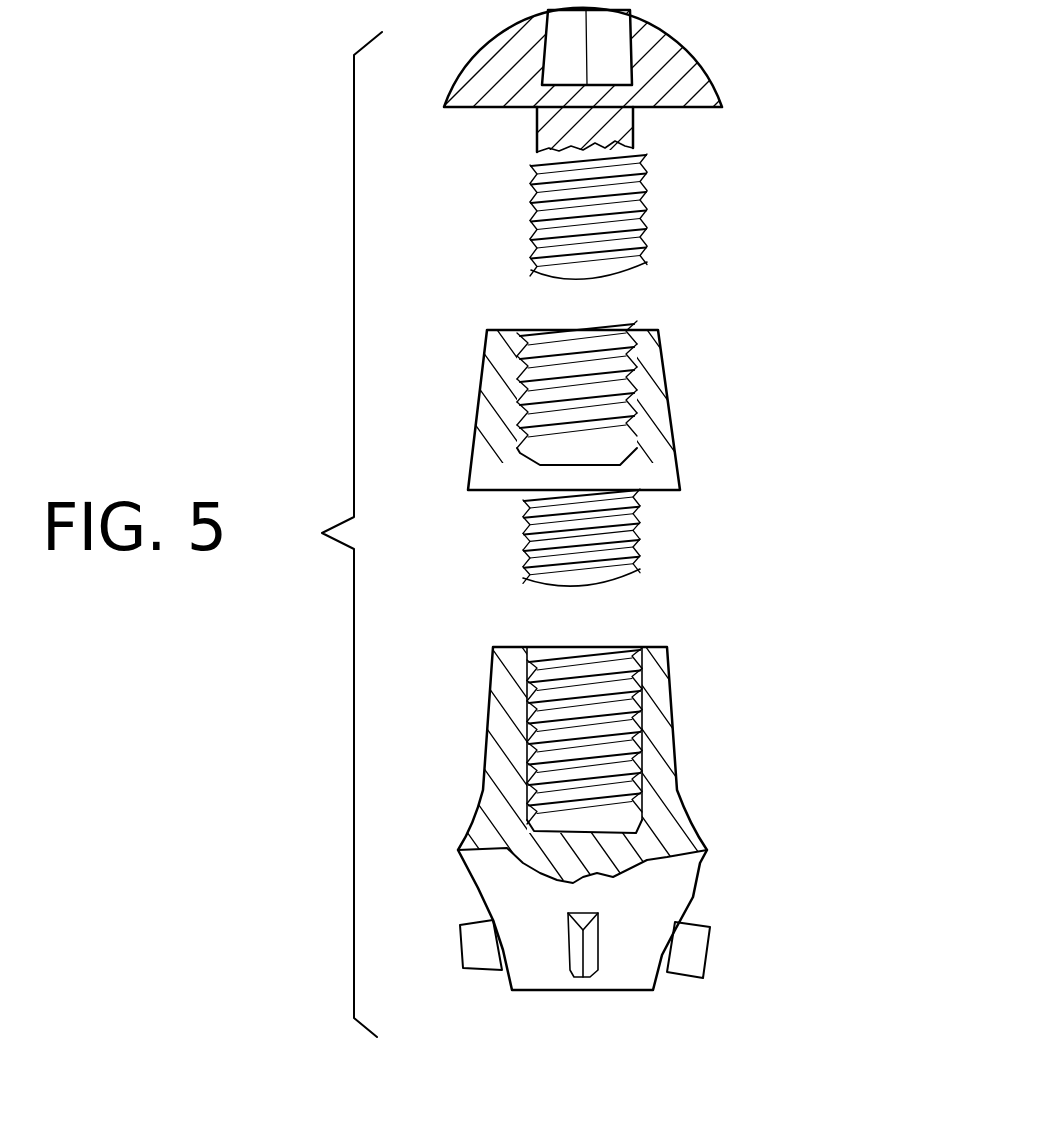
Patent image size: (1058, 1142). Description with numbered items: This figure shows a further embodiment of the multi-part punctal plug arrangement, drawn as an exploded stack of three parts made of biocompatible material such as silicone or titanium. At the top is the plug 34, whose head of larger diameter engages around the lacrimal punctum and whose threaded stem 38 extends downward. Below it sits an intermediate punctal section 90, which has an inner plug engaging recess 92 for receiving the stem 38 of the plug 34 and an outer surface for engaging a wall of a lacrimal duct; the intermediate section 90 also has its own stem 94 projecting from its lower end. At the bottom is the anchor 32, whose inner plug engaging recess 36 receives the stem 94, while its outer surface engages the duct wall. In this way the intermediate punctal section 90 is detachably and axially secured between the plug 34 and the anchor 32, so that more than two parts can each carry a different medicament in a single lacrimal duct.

The plug 34 is at (672, 150).
The stem 38 is at (645, 213).
The intermediate punctal section 90 is at (687, 448).
The inner plug engaging recess 92 is at (657, 333).
The stem 94 is at (640, 543).
The anchor 32 is at (693, 822).
The inner plug engaging recess 36 is at (607, 745).